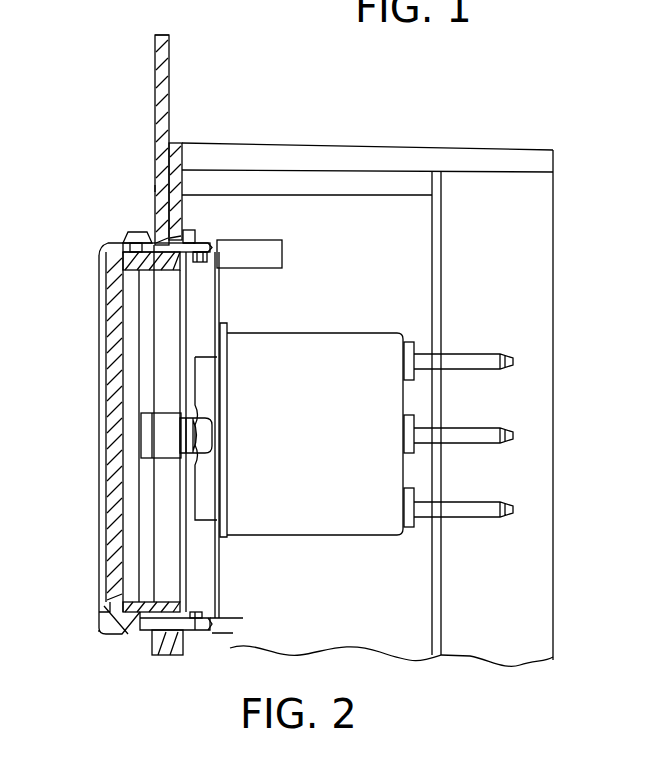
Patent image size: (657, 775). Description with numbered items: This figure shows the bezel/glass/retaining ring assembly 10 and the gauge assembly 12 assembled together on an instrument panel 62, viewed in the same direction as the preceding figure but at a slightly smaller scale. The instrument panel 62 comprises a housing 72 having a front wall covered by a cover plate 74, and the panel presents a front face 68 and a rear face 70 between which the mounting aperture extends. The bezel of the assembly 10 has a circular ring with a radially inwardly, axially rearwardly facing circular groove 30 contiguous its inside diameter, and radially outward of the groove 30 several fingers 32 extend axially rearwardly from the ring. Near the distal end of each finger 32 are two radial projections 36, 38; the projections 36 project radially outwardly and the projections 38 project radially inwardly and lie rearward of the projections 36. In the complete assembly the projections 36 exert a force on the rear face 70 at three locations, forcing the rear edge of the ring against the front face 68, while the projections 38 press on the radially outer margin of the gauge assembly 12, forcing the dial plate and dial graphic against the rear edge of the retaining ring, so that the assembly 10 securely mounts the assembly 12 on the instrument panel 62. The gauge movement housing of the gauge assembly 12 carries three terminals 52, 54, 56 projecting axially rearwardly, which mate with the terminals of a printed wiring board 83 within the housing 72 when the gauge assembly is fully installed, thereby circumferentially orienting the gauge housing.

The bezel/glass/retaining ring assembly 10 is at (100, 632).
The gauge assembly 12 is at (382, 334).
The circular groove 30 is at (103, 600).
The fingers 32 is at (207, 250).
The radial projections 36 is at (190, 238).
The radial projections 38 is at (208, 262).
The terminal 52 is at (485, 358).
The terminal 54 is at (467, 432).
The terminal 56 is at (472, 506).
The instrument panel 62 is at (168, 38).
The front face 68 is at (155, 188).
The rear face 70 is at (186, 217).
The housing 72 is at (343, 147).
The cover plate 74 is at (156, 80).
The printed wiring board 83 is at (442, 243).